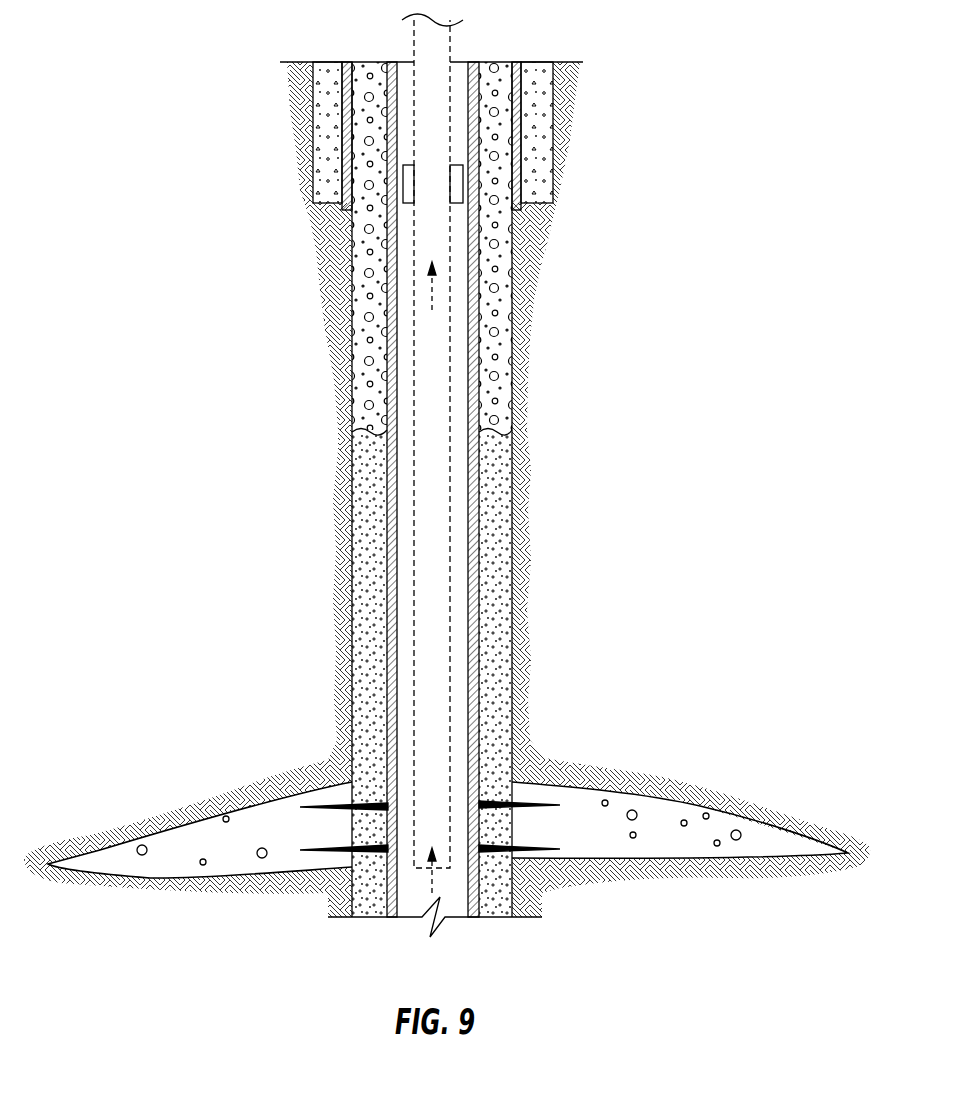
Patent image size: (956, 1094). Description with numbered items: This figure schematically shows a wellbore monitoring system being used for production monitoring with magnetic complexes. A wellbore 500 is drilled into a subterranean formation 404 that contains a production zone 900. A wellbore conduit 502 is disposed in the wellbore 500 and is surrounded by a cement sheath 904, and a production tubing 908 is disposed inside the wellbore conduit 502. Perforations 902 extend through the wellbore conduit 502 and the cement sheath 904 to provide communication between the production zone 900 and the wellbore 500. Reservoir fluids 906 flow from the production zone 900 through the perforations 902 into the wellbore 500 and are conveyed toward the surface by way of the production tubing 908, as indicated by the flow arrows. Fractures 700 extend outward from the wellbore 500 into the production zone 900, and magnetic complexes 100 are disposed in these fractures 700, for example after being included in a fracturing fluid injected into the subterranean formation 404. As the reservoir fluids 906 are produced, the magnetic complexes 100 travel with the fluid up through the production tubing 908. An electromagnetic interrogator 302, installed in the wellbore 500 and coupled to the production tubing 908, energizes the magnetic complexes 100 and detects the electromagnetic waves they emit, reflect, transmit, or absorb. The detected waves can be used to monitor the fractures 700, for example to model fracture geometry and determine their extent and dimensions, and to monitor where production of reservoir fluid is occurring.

The magnetic complex 100 is at (225, 816).
The electromagnetic interrogator 302 is at (403, 173).
The subterranean formation 404 is at (333, 507).
The wellbore 500 is at (518, 485).
The wellbore conduit 502 is at (476, 248).
The fractures 700 is at (148, 830).
The production zone 900 is at (568, 772).
The perforations 902 is at (556, 805).
The cement sheath 904 is at (370, 640).
The reservoir fluids 906 is at (432, 287).
The production tubing 908 is at (413, 52).